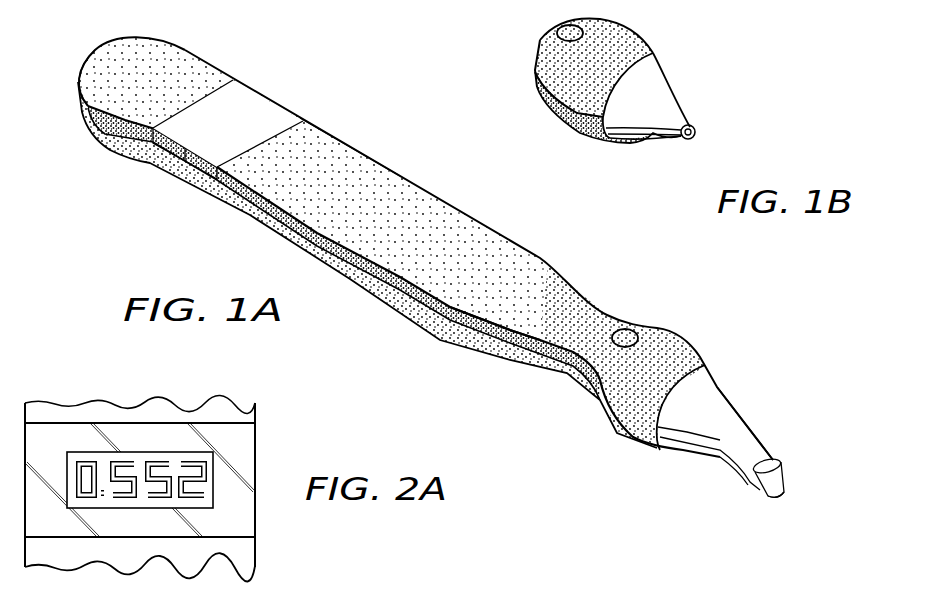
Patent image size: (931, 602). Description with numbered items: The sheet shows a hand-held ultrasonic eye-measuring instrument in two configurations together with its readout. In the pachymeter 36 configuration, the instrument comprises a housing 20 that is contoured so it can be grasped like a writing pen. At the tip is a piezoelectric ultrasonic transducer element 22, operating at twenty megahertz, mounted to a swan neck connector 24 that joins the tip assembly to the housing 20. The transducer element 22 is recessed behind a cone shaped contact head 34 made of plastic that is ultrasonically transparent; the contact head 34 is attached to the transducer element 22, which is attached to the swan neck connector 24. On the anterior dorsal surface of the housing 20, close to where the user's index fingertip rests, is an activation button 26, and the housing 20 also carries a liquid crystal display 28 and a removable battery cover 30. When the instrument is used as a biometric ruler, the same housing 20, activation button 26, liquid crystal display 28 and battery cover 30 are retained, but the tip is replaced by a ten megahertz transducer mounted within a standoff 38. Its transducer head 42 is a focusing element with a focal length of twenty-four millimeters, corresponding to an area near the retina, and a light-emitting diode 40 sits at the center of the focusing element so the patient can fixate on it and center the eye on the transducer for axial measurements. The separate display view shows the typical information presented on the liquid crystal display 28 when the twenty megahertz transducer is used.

In FIG. 1A, the housing 20 is at (370, 283).
In FIG. 1A, the piezoelectric ultrasonic transducer element 22 is at (780, 463).
In FIG. 1A, the swan neck connector 24 is at (728, 398).
In FIG. 1A, the activation button 26 is at (630, 338).
In FIG. 1B, the activation button 26 is at (575, 28).
In FIG. 1A, the liquid crystal display 28 is at (270, 112).
In FIG. 2A, the liquid crystal display 28 is at (250, 447).
In FIG. 1A, the removable battery cover 30 is at (183, 53).
In FIG. 1A, the contact head 34 is at (783, 488).
In FIG. 1A, the pachymeter 36 is at (365, 153).
In FIG. 1B, the standoff 38 is at (653, 78).
In FIG. 1B, the light-emitting diode 40 is at (698, 128).
In FIG. 1A, the transducer head 42 is at (523, 317).
In FIG. 1B, the transducer head 42 is at (687, 140).